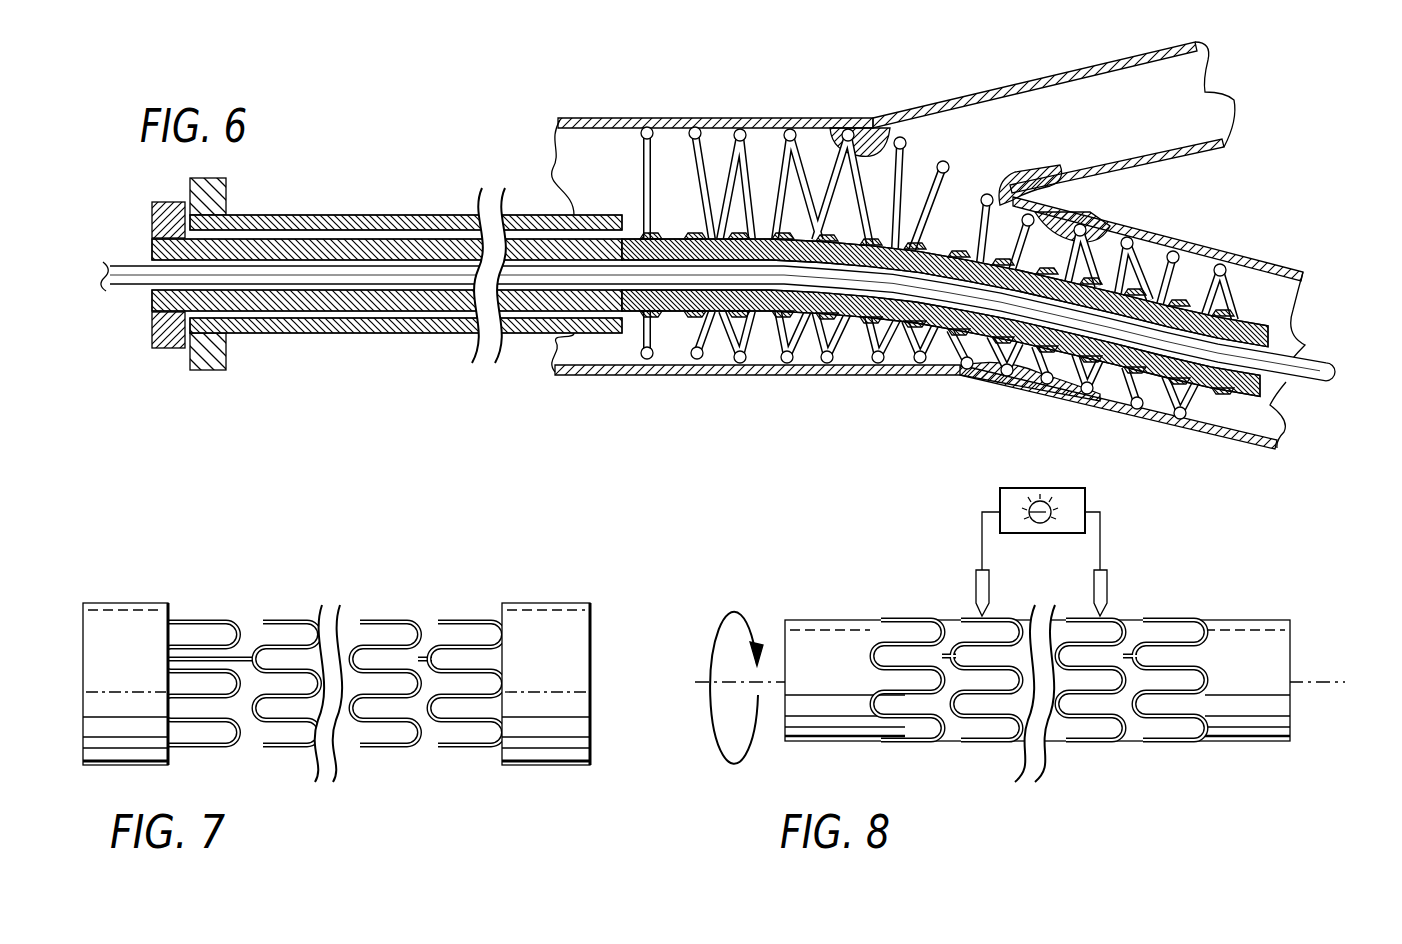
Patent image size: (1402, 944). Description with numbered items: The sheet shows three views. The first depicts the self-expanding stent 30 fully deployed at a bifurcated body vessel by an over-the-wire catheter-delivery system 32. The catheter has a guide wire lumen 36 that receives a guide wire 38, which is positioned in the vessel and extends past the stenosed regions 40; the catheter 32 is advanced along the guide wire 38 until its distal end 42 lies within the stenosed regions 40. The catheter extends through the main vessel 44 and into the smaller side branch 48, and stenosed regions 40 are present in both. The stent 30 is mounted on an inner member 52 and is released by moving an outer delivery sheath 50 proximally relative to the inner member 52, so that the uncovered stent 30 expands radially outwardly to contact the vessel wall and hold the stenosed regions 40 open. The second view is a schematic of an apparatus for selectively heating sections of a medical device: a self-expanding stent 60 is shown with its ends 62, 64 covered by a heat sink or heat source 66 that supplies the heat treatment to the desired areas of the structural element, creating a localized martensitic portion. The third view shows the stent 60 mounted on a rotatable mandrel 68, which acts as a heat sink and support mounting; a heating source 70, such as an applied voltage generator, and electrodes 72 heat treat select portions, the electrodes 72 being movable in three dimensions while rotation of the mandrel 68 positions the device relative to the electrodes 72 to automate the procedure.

In FIG. 6, the stent 30 is at (782, 343).
In FIG. 6, the catheter-delivery system 32 is at (266, 372).
In FIG. 6, the guide wire lumen 36 is at (270, 262).
In FIG. 6, the guide wire 38 is at (1315, 362).
In FIG. 6, the stenosed regions 40 is at (832, 130).
In FIG. 6, the distal end 42 is at (893, 128).
In FIG. 6, the main vessel 44 is at (587, 365).
In FIG. 6, the side branch 48 is at (1222, 414).
In FIG. 6, the outer delivery sheath 50 is at (410, 214).
In FIG. 6, the inner member 52 is at (411, 311).
In FIG. 7, the self-expanding stent 60 is at (298, 620).
In FIG. 8, the self-expanding stent 60 is at (1085, 742).
In FIG. 7, the end of the stent 62 is at (178, 620).
In FIG. 7, the end of the stent 64 is at (502, 622).
In FIG. 7, the heat sink or heat source 66 is at (125, 628).
In FIG. 8, the rotatable mandrel 68 is at (833, 648).
In FIG. 8, the heating source 70 is at (1050, 488).
In FIG. 8, the electrodes 72 is at (975, 590).